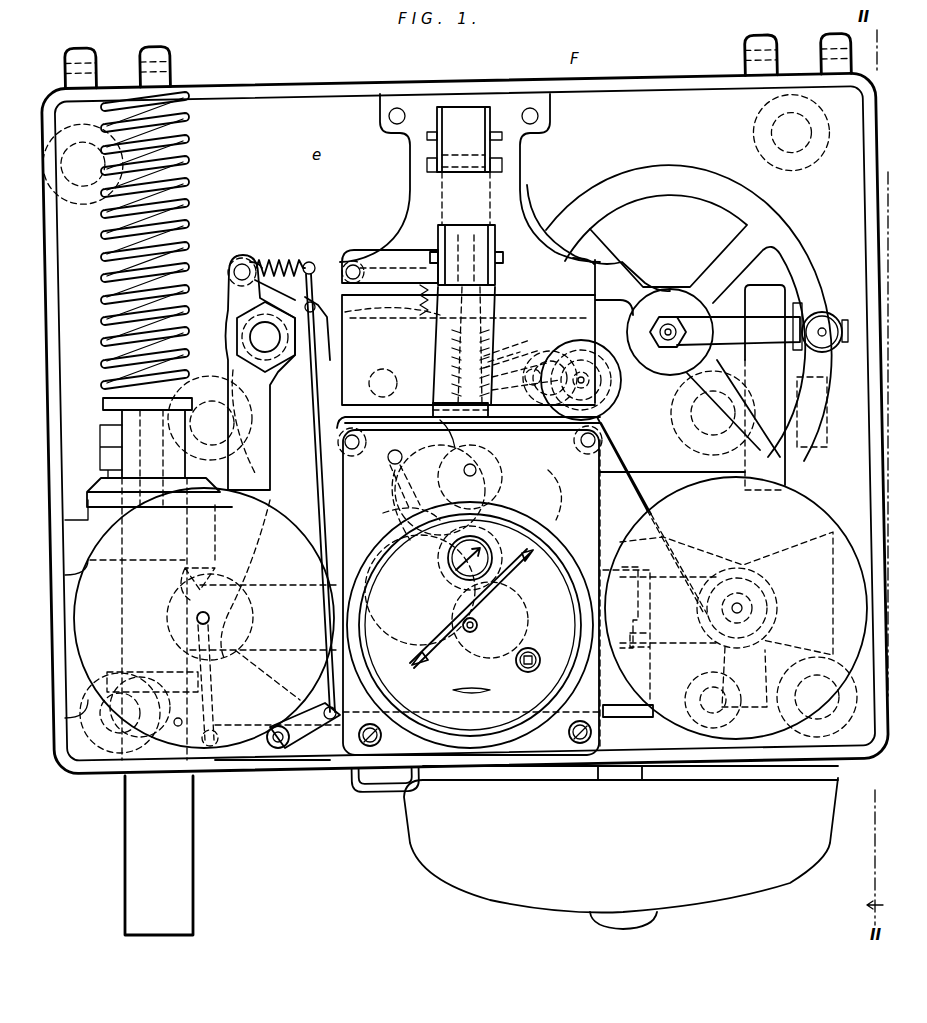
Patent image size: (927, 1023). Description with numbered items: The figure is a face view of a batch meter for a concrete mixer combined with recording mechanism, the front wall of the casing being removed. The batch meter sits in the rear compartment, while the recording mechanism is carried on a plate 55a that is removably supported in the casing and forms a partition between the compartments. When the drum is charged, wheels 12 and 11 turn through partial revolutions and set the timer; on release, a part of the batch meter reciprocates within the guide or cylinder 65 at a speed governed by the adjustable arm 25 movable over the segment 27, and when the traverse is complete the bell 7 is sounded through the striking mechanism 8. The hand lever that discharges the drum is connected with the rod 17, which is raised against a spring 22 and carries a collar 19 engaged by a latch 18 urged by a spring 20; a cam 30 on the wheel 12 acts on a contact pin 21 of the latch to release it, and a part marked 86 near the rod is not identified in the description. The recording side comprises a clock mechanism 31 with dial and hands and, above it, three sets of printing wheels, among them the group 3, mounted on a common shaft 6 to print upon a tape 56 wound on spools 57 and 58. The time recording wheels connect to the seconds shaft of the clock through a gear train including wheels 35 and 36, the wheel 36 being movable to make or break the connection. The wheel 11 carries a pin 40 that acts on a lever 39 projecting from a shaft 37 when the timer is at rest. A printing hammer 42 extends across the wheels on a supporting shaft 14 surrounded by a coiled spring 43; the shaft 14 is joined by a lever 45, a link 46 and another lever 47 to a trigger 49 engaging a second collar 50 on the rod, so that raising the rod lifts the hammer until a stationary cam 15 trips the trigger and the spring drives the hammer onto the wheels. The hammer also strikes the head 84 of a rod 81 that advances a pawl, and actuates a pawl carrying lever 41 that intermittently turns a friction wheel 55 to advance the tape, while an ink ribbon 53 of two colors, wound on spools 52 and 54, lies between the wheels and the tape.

The printing wheels 3 is at (530, 452).
The common shaft 6 is at (470, 464).
The bell 7 is at (783, 880).
The striking mechanism 8 is at (646, 605).
The wheel 11 is at (297, 489).
The wheel 12 is at (322, 400).
The supporting shaft 14 is at (488, 358).
The stationary cam 15 is at (182, 567).
The rod 17 is at (159, 940).
The latch 18 is at (244, 260).
The collar 19 is at (97, 488).
The spring 20 is at (280, 264).
The contact pin 21 is at (334, 262).
The spring 22 is at (186, 187).
The adjustable arm 25 is at (718, 322).
The segment 27 is at (646, 172).
The cam 30 is at (313, 350).
The clock mechanism 31 is at (470, 625).
The gear train wheel 35 is at (471, 608).
The gear train wheel 36 is at (553, 503).
The shaft 37 is at (396, 450).
The lever 39 is at (388, 482).
The pin 40 is at (383, 513).
The pawl carrying lever 41 is at (489, 373).
The printing hammer 42 is at (491, 404).
The coiled spring 43 is at (503, 325).
The lever 45 is at (386, 262).
The link 46 is at (307, 530).
The lever 47 is at (298, 772).
The trigger 49 is at (217, 680).
The second collar 50 is at (158, 666).
The spool 52 is at (505, 228).
The ink ribbon 53 is at (440, 345).
The spool 54 is at (487, 107).
The friction wheel 55 is at (615, 363).
The plate 55a is at (415, 215).
The tape 56 is at (620, 458).
The spool 57 is at (230, 504).
The spool 58 is at (736, 608).
The guide or cylinder 65 is at (604, 372).
The rod 81 is at (450, 448).
The head or contact end 84 is at (428, 450).
The rod 86 is at (172, 732).